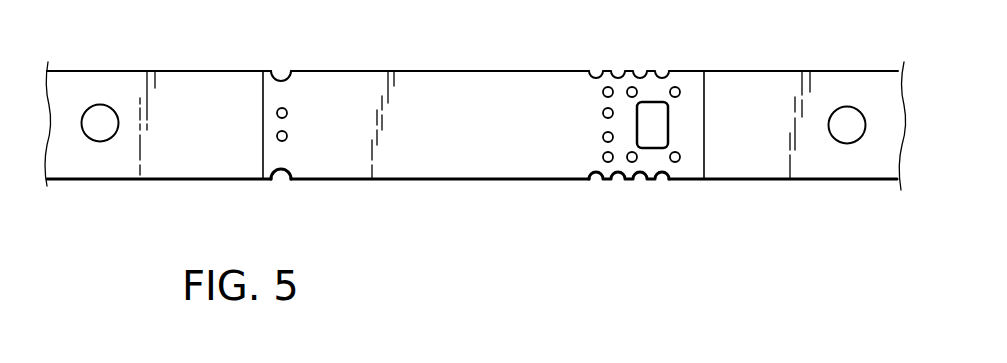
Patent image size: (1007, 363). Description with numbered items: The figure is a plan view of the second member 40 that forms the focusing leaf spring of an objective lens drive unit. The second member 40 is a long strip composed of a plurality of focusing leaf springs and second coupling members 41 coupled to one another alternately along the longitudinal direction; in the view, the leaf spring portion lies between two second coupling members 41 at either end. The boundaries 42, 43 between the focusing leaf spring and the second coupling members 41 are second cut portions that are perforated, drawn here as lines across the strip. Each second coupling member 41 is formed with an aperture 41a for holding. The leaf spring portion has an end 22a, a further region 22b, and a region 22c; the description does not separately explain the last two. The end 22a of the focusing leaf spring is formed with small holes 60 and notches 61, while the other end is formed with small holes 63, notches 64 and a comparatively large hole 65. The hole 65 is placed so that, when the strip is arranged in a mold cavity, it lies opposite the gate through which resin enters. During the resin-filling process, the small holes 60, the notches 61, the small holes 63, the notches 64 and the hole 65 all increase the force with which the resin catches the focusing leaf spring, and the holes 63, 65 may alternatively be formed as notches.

The second member 40 is at (226, 70).
The second coupling member 41 is at (185, 158).
The aperture for holding 41a is at (102, 125).
The boundary (second cut portion) 42 is at (262, 162).
The boundary (second cut portion) 43 is at (703, 162).
The end of focusing leaf spring 22a is at (322, 83).
The second section of terminal plate 22b is at (690, 85).
The intermediate section of terminal plate 22c is at (440, 165).
The small holes 60 is at (288, 112).
The notches 61 is at (282, 181).
The small holes 63 is at (603, 136).
The notches 64 is at (675, 182).
The comparatively large hole 65 is at (651, 117).